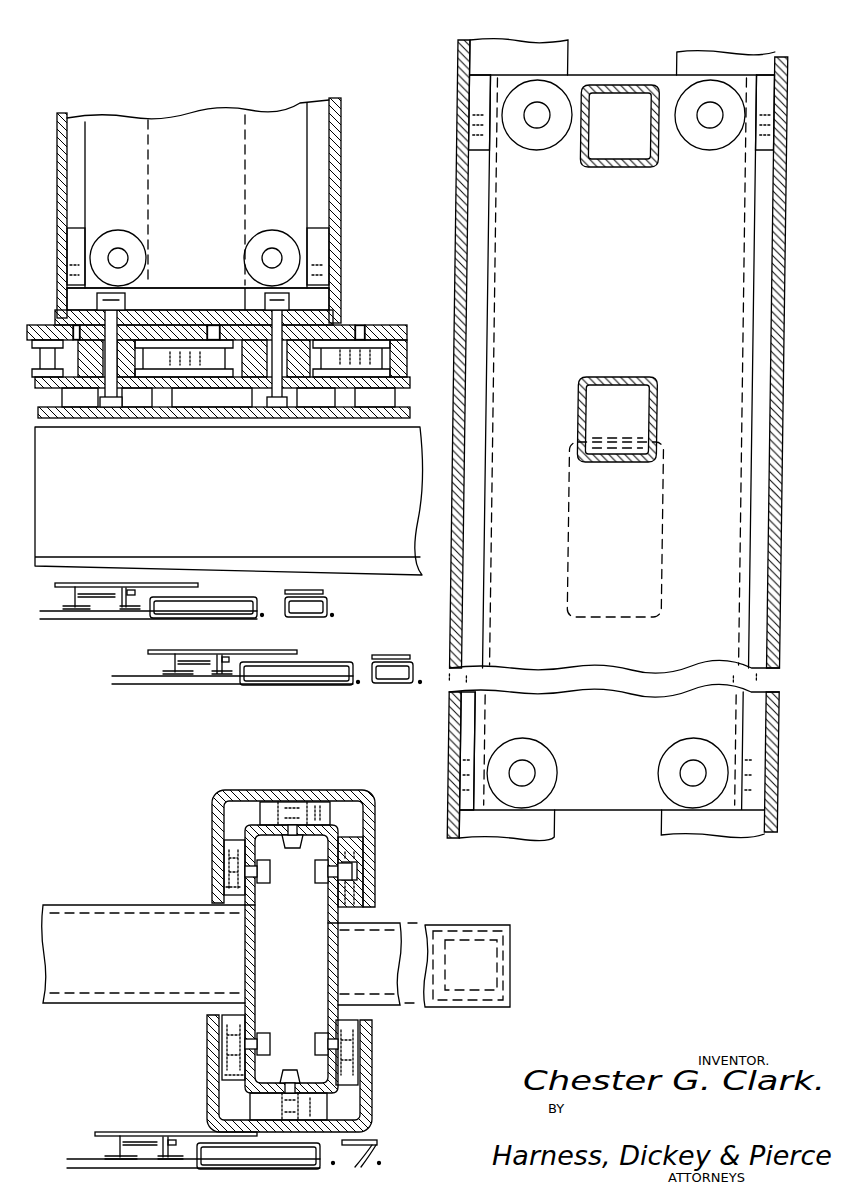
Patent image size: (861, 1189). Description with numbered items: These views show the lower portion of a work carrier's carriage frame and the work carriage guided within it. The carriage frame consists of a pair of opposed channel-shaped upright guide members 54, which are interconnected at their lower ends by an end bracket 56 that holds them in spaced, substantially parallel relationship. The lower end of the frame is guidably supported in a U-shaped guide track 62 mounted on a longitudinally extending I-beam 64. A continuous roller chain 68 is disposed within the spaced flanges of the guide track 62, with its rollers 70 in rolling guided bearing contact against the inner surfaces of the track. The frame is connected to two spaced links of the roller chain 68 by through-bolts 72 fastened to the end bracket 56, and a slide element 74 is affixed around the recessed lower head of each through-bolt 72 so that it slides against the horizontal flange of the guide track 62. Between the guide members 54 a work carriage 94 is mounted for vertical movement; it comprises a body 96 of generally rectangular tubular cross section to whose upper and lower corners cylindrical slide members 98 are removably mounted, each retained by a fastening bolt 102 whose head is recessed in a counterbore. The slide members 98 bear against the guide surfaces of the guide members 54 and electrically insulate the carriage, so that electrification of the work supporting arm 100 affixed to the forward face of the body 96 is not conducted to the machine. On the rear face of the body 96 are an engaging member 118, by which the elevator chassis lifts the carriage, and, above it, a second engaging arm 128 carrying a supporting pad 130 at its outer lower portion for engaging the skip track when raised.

In FIG. 5, the channel-shaped upright guide member 54 is at (77, 122).
In FIG. 6, the channel-shaped upright guide member 54 is at (461, 587).
In FIG. 7, the channel-shaped upright guide member 54 is at (306, 790).
In FIG. 5, the end bracket 56 is at (300, 318).
In FIG. 5, the U-shaped guide track 62 is at (177, 409).
In FIG. 5, the I-beam 64 is at (318, 518).
In FIG. 5, the roller chain 68 is at (373, 333).
In FIG. 5, the roller 70 is at (141, 387).
In FIG. 5, the through-bolt 72 is at (150, 292).
In FIG. 5, the slide element 74 is at (73, 410).
In FIG. 5, the work carriage 94 is at (294, 137).
In FIG. 6, the work carriage 94 is at (480, 707).
In FIG. 7, the work carriage 94 is at (240, 931).
In FIG. 5, the body 96 is at (268, 113).
In FIG. 6, the body 96 is at (720, 270).
In FIG. 7, the body 96 is at (325, 950).
In FIG. 5, the slide member 98 is at (318, 236).
In FIG. 6, the slide member 98 is at (482, 144).
In FIG. 7, the slide member 98 is at (269, 806).
In FIG. 6, the work supporting arm 100 is at (658, 587).
In FIG. 7, the work supporting arm 100 is at (113, 973).
In FIG. 6, the fastening bolt 102 is at (707, 110).
In FIG. 7, the fastening bolt 102 is at (207, 858).
In FIG. 6, the engaging member 118 is at (640, 375).
In FIG. 6, the second engaging arm 128 is at (636, 168).
In FIG. 7, the second engaging arm 128 is at (443, 923).
In FIG. 7, the supporting pad 130 is at (517, 950).